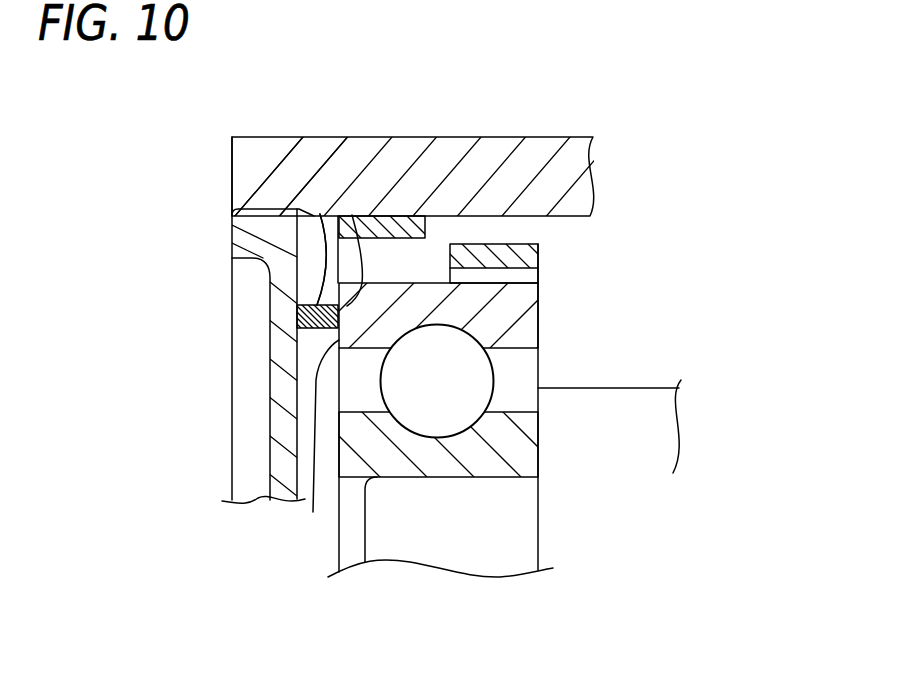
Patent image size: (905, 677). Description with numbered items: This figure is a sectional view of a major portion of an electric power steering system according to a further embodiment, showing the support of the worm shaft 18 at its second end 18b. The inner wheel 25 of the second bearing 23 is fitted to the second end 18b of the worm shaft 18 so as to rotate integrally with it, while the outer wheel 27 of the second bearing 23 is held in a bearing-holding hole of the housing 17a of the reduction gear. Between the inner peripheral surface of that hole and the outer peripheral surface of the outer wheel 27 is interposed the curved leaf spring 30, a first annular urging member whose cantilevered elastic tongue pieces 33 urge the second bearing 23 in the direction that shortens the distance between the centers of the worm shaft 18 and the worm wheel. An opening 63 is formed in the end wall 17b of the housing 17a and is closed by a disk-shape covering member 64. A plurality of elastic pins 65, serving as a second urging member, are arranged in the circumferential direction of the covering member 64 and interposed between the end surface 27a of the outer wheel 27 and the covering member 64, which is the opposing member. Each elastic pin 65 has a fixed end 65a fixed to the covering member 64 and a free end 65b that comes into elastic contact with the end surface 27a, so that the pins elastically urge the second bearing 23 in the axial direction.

The housing 17a is at (482, 137).
The end wall 17b is at (257, 165).
The worm shaft 18 is at (637, 402).
The second end 18b is at (443, 552).
The second bearing 23 is at (512, 376).
The inner wheel 25 is at (540, 455).
The outer wheel 27 is at (523, 291).
The end surface 27a is at (317, 444).
The curved leaf spring 30 is at (371, 195).
The elastic tongue piece 33 is at (404, 230).
The opening 63 is at (297, 234).
The covering member 64 is at (270, 461).
The elastic pin 65 is at (320, 214).
The fixed end 65a is at (297, 306).
The free end 65b is at (352, 215).